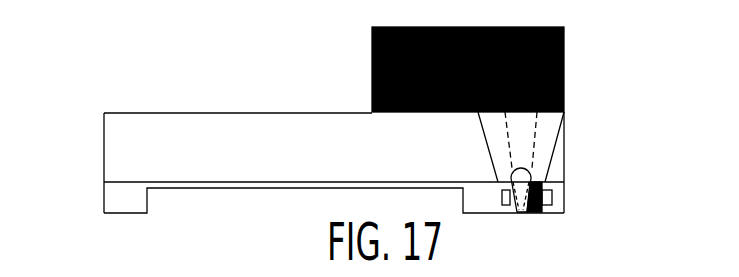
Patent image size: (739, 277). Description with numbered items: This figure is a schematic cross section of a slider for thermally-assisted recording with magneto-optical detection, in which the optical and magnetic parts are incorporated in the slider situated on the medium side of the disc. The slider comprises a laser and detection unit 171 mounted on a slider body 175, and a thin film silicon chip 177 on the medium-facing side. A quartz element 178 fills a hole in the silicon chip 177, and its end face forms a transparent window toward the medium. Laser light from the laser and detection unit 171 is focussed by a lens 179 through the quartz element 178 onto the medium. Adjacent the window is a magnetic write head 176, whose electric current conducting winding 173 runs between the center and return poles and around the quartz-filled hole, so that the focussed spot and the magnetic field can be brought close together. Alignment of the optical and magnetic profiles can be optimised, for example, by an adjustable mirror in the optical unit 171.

The laser and detection unit 171 is at (564, 74).
The slider body 175 is at (130, 150).
The thin film silicon chip 177 is at (120, 204).
The lens 179 is at (525, 172).
The quartz element 178 is at (522, 213).
The magnetic write head 176 is at (537, 214).
The electric current conducting winding 173 is at (552, 197).